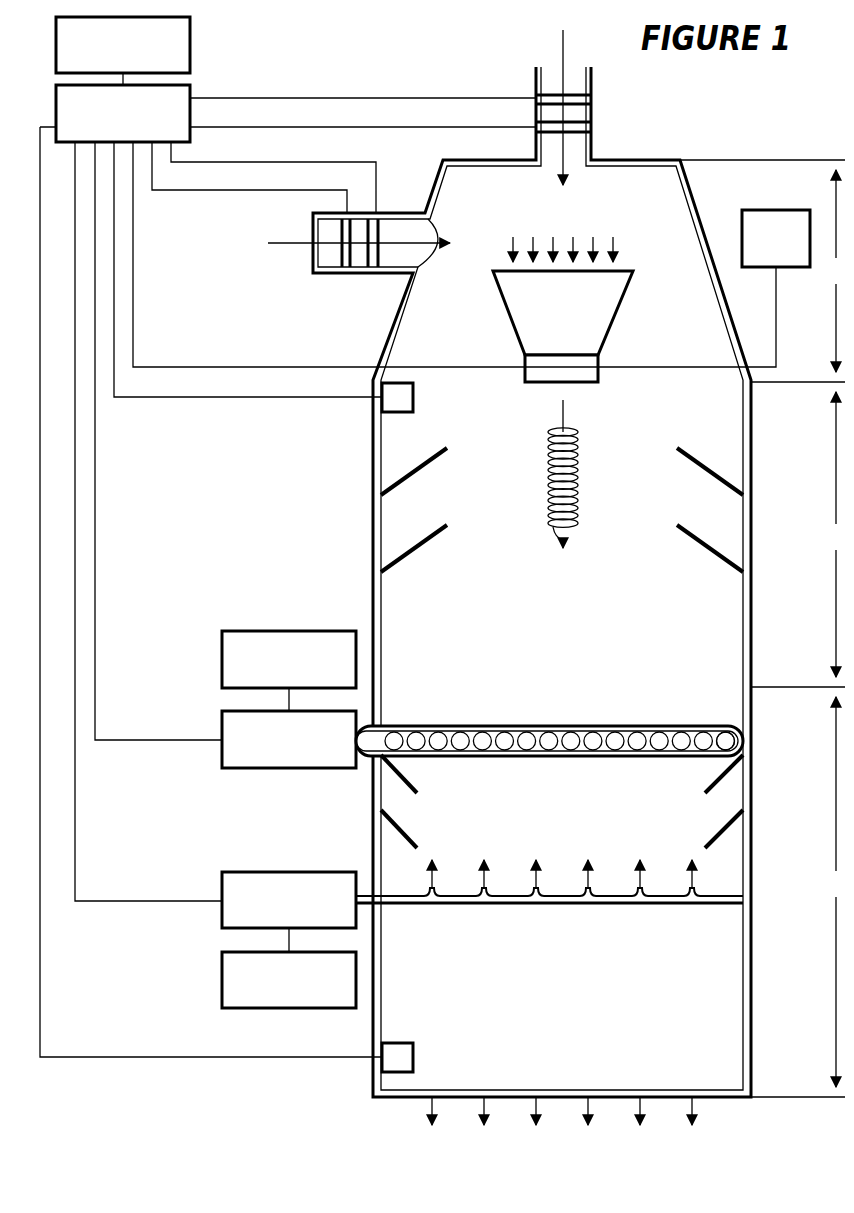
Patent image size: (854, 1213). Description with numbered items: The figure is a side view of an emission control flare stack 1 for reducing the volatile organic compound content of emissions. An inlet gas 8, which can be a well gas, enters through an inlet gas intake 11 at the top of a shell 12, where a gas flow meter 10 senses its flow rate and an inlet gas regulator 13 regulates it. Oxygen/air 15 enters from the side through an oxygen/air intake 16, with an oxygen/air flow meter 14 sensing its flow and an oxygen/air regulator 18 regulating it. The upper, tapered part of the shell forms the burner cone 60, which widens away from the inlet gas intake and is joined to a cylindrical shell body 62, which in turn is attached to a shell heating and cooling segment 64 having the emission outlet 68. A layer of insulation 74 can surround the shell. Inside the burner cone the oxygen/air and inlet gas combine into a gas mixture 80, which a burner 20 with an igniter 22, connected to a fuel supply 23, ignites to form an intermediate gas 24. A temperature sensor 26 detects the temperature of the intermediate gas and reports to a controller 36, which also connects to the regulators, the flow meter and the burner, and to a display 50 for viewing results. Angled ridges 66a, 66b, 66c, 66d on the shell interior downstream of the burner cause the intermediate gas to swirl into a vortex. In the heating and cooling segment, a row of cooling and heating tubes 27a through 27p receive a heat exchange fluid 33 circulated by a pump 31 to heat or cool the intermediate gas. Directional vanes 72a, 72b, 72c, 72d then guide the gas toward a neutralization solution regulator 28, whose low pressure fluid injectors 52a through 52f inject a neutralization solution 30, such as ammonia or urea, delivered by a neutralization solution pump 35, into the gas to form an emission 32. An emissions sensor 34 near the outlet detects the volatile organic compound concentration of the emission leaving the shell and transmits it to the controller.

The emission control flare stack 1 is at (780, 101).
The inlet gas 8 is at (563, 58).
The gas flow meter 10 is at (592, 130).
The inlet gas intake 11 is at (536, 81).
The shell 12 is at (690, 148).
The inlet gas regulator 13 is at (592, 102).
The oxygen/air flow meter 14 is at (374, 274).
The oxygen/air 15 is at (286, 243).
The oxygen/air intake 16 is at (396, 213).
The oxygen/air regulator 18 is at (346, 274).
The burner 20 is at (619, 318).
The igniter 22 is at (587, 383).
The fuel supply 23 is at (776, 210).
The intermediate gas 24 is at (578, 526).
The temperature sensor 26 is at (413, 397).
The cooling and heating tube 27a is at (412, 731).
The cooling and heating tube 27p is at (714, 731).
The neutralization solution regulator 28 is at (562, 905).
The neutralization solution 30 is at (289, 1008).
The pump 31 is at (289, 768).
The emission 32 is at (695, 1112).
The heat exchange fluid 33 is at (289, 631).
The emissions sensor 34 is at (413, 1058).
The neutralization solution pump 35 is at (289, 872).
The controller 36 is at (56, 103).
The display 50 is at (56, 44).
The low pressure fluid injector 52a is at (428, 892).
The low pressure fluid injector 52f is at (696, 892).
The burner cone 60 is at (764, 271).
The shell body 62 is at (800, 539).
The shell heating and cooling segment 64 is at (800, 897).
The ridge 66a is at (412, 477).
The ridge 66b is at (412, 555).
The ridge 66c is at (714, 555).
The ridge 66d is at (714, 477).
The emission outlet 68 is at (554, 1071).
The directional vane 72a is at (414, 783).
The directional vane 72b is at (414, 833).
The directional vane 72c is at (710, 833).
The directional vane 72d is at (710, 783).
The layer of insulation 74 is at (373, 450).
The gas mixture 80 is at (613, 240).